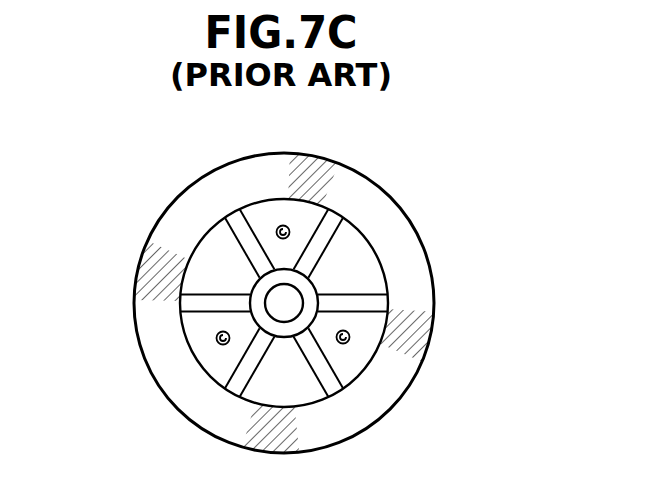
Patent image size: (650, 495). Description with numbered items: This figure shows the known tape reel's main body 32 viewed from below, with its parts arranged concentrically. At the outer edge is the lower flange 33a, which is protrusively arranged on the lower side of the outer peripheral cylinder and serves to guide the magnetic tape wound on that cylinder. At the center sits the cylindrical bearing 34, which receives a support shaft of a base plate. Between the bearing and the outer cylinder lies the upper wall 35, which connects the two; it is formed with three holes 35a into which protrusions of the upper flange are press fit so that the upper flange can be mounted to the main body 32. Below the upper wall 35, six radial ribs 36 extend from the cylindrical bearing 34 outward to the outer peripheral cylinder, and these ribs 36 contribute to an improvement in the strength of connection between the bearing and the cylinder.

The main body 32 is at (444, 278).
The lower flange 33a is at (403, 238).
The cylindrical bearing 34 is at (285, 332).
The upper wall 35 is at (208, 248).
The holes 35a is at (281, 224).
The radial ribs 36 is at (228, 212).